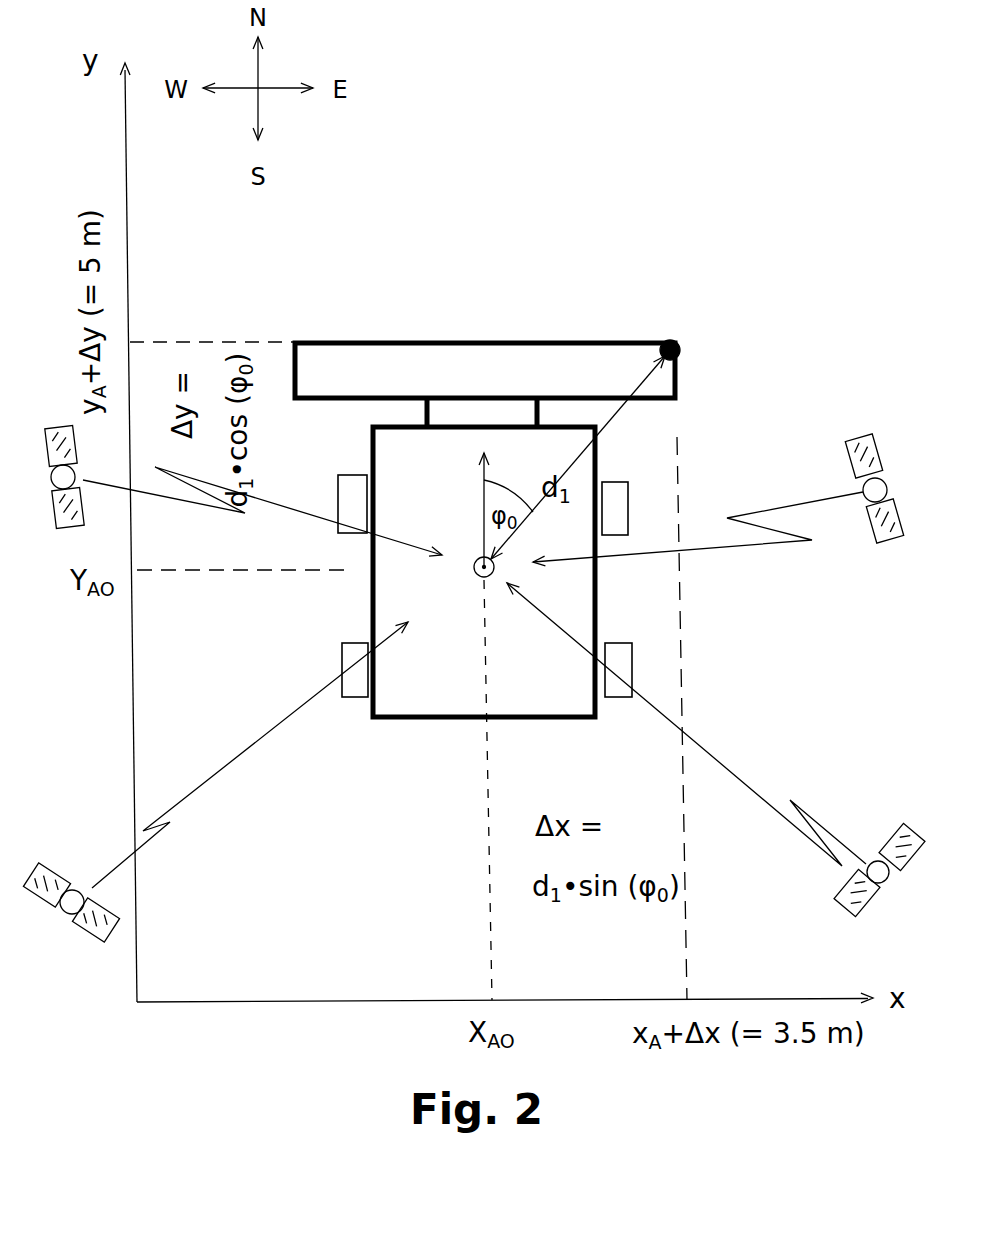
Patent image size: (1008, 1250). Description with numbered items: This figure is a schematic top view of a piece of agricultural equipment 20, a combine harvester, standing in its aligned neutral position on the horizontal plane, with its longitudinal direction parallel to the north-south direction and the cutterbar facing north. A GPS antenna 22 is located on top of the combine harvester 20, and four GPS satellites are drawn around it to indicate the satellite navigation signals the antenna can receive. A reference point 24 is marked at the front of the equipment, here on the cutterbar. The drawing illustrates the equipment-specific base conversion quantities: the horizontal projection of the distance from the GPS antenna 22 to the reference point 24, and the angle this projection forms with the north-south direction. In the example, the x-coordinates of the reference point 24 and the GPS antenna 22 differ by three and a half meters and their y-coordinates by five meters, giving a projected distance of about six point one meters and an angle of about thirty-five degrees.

The agricultural equipment 20 is at (403, 728).
The GPS antenna 22 is at (476, 575).
The reference point 24 is at (682, 343).